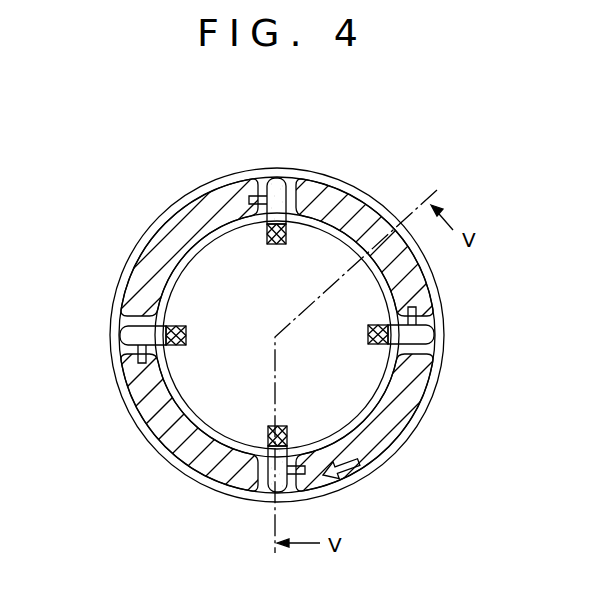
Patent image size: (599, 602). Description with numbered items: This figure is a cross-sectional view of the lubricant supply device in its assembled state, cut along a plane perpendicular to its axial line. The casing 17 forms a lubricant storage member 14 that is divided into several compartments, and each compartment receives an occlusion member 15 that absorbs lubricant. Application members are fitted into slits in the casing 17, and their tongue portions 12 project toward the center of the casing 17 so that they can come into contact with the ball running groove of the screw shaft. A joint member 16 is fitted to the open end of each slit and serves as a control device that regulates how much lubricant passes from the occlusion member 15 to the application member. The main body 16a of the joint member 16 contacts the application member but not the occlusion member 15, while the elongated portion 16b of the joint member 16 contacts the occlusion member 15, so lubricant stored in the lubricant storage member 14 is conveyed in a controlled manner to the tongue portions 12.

The tongue portion 12 is at (275, 431).
The lubricant storage member 14 is at (156, 237).
The occlusion member 15 is at (188, 212).
The joint member 16 is at (279, 338).
The main body 16a is at (284, 179).
The elongated portion 16b is at (257, 195).
The casing 17 is at (324, 469).